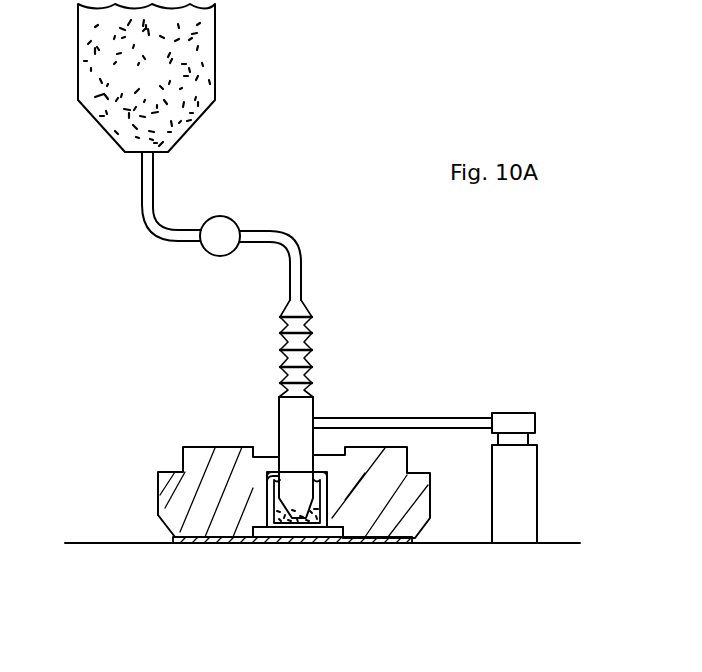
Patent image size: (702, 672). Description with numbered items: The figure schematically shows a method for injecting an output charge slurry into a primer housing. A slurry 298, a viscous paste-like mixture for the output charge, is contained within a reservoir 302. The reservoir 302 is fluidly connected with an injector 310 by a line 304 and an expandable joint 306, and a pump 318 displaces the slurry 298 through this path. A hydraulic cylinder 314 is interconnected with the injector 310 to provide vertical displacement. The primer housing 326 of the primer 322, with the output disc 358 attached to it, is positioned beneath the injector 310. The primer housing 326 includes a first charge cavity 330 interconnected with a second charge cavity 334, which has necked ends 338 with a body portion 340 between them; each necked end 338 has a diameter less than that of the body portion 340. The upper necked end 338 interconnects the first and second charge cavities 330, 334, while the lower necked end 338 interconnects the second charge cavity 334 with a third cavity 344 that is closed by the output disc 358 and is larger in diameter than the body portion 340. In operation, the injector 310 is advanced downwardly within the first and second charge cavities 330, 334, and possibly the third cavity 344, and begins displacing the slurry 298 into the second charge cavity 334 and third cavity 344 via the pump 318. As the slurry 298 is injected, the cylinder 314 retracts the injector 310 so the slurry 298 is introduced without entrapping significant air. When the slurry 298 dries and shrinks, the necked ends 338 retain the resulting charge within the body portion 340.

The slurry 298 is at (198, 98).
The reservoir 302 is at (185, 130).
The line 304 is at (285, 233).
The pump 318 is at (215, 258).
The expandable joint 306 is at (312, 333).
The injector 310 is at (278, 410).
The hydraulic cylinder 314 is at (537, 481).
The primer 322 is at (158, 487).
The primer housing 326 is at (160, 514).
The first charge cavity 330 is at (255, 455).
The necked ends 338 is at (330, 518).
The body portion 340 is at (327, 488).
The second charge cavity 334 is at (267, 474).
The third cavity 344 is at (372, 538).
The output disc 358 is at (390, 540).